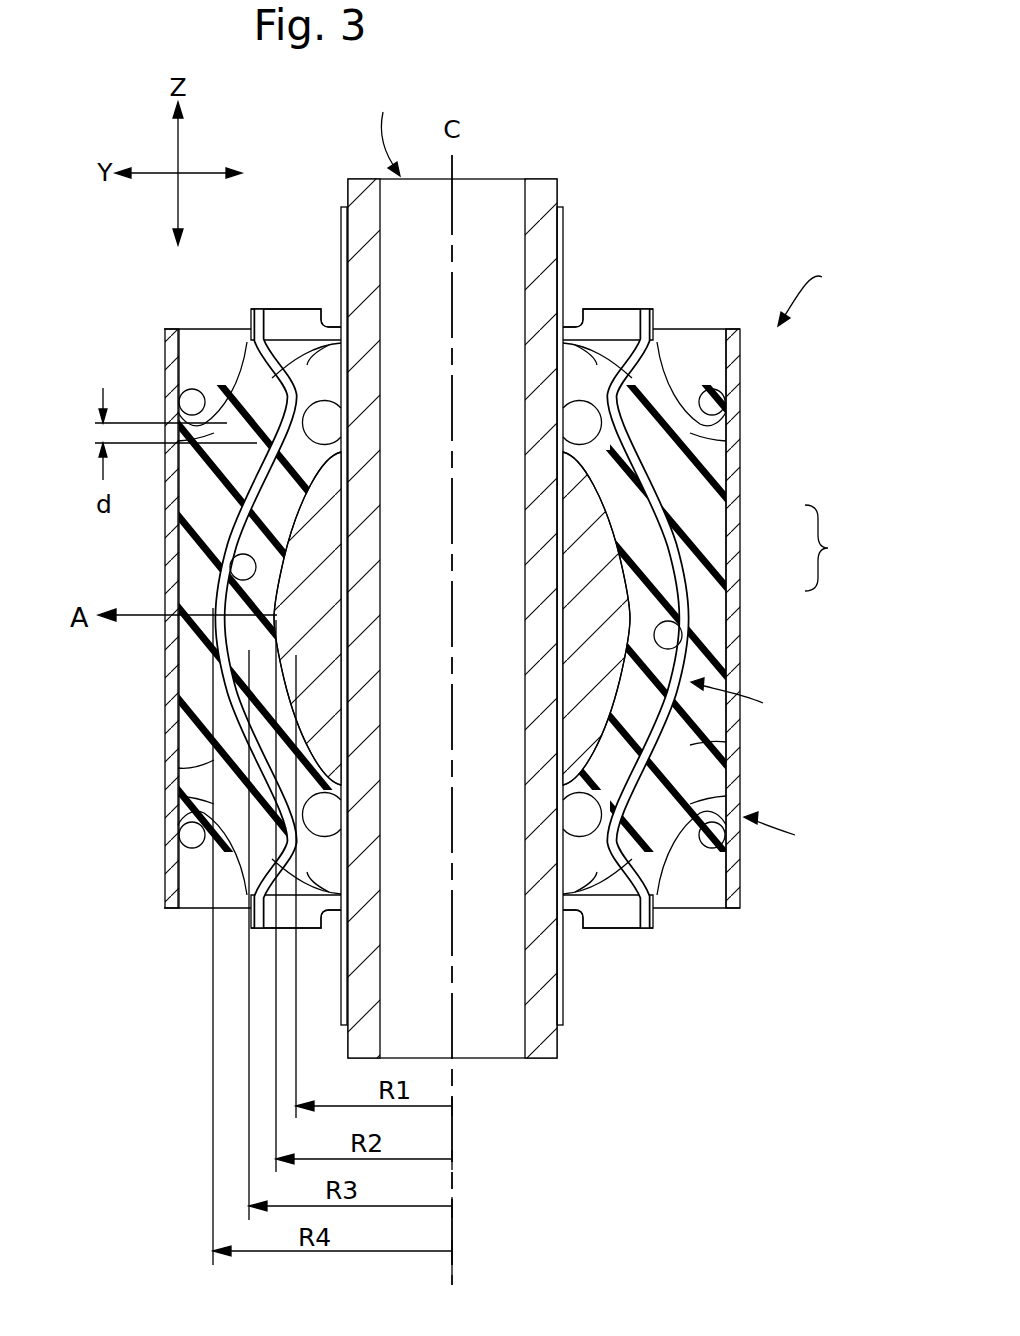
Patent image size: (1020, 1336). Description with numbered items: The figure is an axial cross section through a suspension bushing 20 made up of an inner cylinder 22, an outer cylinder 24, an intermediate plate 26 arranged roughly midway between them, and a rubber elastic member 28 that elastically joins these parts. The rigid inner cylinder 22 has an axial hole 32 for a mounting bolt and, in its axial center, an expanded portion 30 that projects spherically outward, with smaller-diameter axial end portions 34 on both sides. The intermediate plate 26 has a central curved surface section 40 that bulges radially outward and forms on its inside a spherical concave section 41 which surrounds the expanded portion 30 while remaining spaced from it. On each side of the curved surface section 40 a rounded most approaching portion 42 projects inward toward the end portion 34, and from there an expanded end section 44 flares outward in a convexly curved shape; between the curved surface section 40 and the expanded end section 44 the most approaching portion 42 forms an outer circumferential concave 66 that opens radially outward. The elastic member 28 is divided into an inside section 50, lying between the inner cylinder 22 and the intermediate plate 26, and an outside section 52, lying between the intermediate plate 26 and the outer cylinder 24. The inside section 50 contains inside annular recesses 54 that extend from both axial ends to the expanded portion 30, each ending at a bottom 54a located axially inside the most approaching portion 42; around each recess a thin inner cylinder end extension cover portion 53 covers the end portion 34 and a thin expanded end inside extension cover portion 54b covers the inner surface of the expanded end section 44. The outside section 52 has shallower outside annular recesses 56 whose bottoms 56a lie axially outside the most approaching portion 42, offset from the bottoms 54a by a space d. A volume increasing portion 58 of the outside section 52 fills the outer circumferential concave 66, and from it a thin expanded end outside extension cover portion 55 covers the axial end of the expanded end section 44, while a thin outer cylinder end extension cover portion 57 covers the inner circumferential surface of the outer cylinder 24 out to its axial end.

The suspension bushing 20 is at (818, 293).
The inner cylinder 22 is at (386, 128).
The outer cylinder 24 is at (783, 837).
The intermediate plate 26 is at (739, 705).
The elastic member 28 is at (831, 548).
The expanded portion 30 is at (620, 617).
The axial hole 32 is at (480, 197).
The axial end portion 34 is at (360, 245).
The curved surface section 40 is at (657, 625).
The spherical concave section 41 is at (680, 658).
The most approaching portion 42 is at (603, 420).
The expanded end section 44 is at (637, 377).
The inside section 50 is at (657, 582).
The outside section 52 is at (703, 523).
The inner cylinder end extension cover portion 53 is at (343, 293).
The inside annular recess 54 is at (593, 363).
The bottom of the inside annular recess 54a is at (593, 440).
The expanded end inside extension cover portion 54b is at (640, 347).
The expanded end outside extension cover portion 55 is at (653, 363).
The outside annular recess 56 is at (693, 363).
The bottom of the outside annular recess 56a is at (697, 413).
The outer cylinder end extension cover portion 57 is at (723, 360).
The volume increasing portion 58 is at (655, 433).
The intermediate plate outer circumferential concave 66 is at (703, 747).